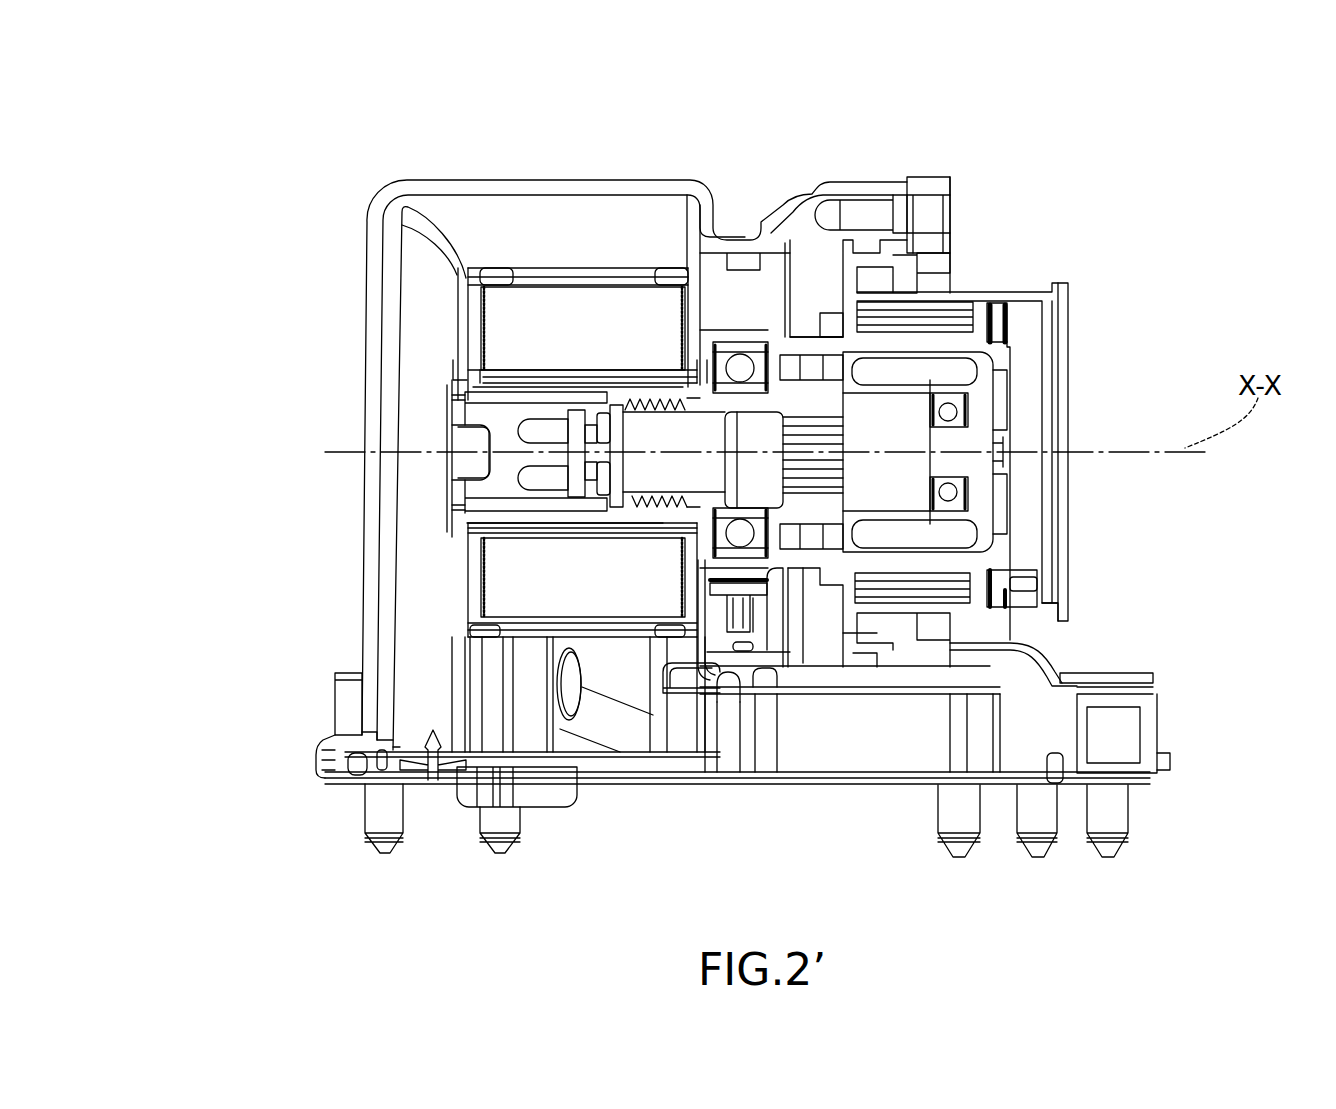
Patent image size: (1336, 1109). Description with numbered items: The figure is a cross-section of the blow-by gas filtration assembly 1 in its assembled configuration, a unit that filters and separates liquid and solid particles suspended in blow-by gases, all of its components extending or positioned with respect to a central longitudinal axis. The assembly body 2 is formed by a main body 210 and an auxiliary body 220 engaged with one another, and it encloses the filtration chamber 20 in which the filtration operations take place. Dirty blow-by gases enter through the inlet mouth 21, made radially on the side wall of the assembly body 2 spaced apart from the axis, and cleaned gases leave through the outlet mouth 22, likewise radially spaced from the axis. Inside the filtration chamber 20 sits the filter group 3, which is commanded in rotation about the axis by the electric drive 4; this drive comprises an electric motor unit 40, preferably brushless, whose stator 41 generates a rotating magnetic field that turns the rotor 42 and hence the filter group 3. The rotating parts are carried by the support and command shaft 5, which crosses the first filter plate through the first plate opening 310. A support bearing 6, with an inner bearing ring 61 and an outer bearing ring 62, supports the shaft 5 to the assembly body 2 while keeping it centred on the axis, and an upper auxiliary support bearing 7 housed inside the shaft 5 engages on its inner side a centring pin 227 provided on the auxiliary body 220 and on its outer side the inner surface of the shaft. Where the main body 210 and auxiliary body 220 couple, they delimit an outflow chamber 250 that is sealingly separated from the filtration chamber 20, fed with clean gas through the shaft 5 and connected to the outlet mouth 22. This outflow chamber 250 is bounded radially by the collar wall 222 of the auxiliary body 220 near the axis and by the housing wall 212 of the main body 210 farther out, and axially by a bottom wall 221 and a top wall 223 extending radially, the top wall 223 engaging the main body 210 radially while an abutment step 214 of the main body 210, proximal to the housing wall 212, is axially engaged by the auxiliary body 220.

The blow-by gas filtration assembly 1 is at (156, 142).
The assembly body 2 is at (260, 458).
The filter group 3 is at (584, 263).
The electric drive 4 is at (1000, 386).
The support and command shaft 5 is at (820, 388).
The support bearing 6 is at (698, 355).
The upper auxiliary support bearing 7 is at (1000, 503).
The filtration chamber 20 is at (613, 677).
The inlet mouth 21 is at (912, 822).
The outlet mouth 22 is at (683, 733).
The electric motor unit 40 is at (1000, 370).
The stator 41 is at (1008, 325).
The rotor 42 is at (1000, 545).
The inner bearing ring 61 is at (693, 390).
The outer bearing ring 62 is at (742, 360).
The main body 210 is at (452, 183).
The housing wall 212 is at (785, 255).
The abutment step 214 is at (895, 188).
The auxiliary body 220 is at (951, 183).
The bottom wall 221 is at (758, 615).
The collar wall 222 is at (803, 570).
The top wall 223 is at (842, 633).
The centring pin 227 is at (1000, 462).
The outflow chamber 250 is at (1000, 632).
The first plate opening 310 is at (545, 413).